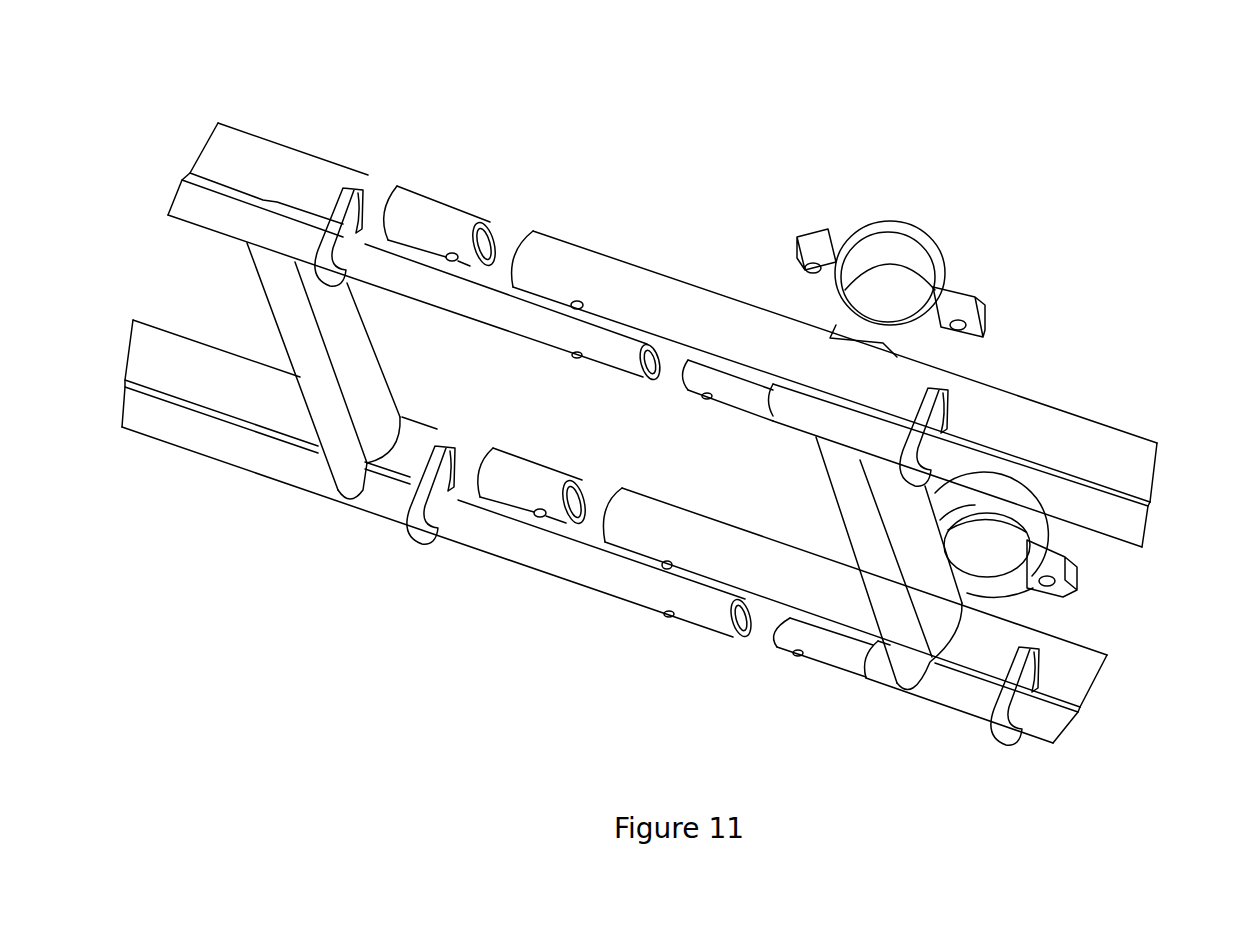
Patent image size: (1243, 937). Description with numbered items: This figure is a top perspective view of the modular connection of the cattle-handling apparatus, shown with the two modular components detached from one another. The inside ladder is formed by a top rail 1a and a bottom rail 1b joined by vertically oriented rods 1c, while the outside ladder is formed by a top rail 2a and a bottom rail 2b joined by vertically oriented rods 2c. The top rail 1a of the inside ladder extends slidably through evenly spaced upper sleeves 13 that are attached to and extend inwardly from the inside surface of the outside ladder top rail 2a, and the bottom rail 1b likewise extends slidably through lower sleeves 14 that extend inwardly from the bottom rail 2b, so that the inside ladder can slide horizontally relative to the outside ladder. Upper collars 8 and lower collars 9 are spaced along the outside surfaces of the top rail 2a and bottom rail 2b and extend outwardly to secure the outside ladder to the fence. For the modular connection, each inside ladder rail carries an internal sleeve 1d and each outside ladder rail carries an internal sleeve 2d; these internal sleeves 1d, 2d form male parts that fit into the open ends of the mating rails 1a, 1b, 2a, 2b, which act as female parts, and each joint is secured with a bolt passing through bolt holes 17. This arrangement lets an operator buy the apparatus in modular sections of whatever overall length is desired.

The top rail of the inside ladder 1a is at (1113, 520).
The bottom rail of the inside ladder 1b is at (1050, 725).
The vertically oriented rods of the inside ladder 1c is at (903, 630).
The internal sleeve 1d is at (752, 393).
The top rail of the outside ladder 2a is at (1010, 407).
The bottom rail of the outside ladder 2b is at (1073, 678).
The vertically oriented rods of the outside ladder 2c is at (930, 583).
The internal sleeve 2d is at (425, 203).
The upper collar 8 is at (863, 250).
The lower collar 9 is at (967, 510).
The upper sleeve 13 is at (343, 213).
The lower sleeve 14 is at (420, 513).
The bolt holes 17 is at (447, 253).